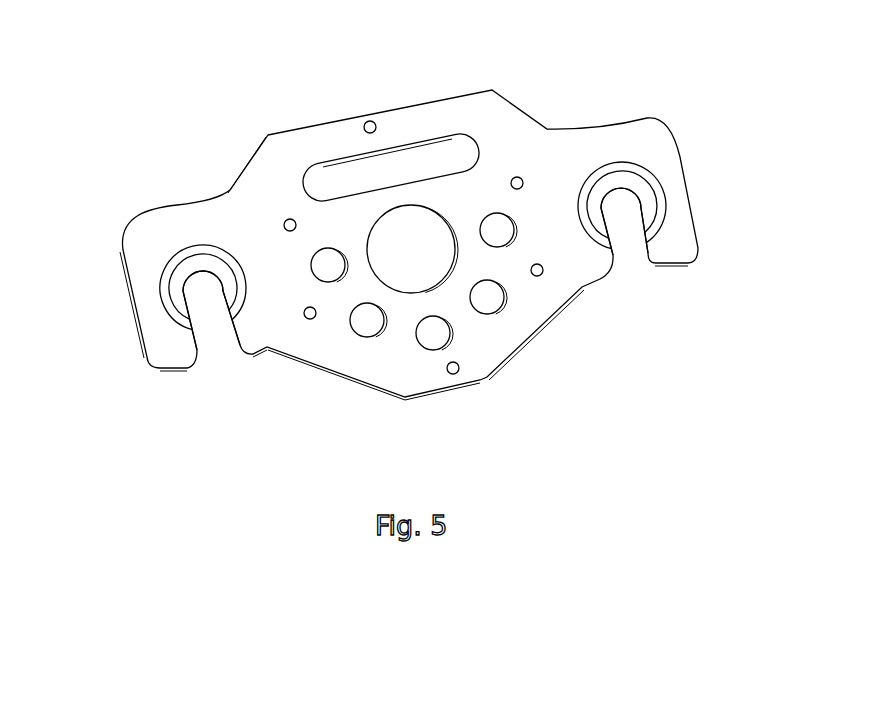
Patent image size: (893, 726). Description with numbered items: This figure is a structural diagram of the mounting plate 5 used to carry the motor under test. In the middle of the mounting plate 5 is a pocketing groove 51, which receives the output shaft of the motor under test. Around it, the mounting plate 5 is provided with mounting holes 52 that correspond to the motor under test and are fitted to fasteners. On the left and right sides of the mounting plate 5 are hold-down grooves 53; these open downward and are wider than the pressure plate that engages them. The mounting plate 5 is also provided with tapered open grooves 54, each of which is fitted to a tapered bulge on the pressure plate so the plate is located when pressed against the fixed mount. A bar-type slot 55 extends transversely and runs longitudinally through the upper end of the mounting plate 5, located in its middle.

The mounting plate 5 is at (540, 130).
The pocketing groove 51 is at (410, 252).
The mounting holes 52 is at (330, 270).
The hold-down grooves 53 is at (213, 328).
The tapered open grooves 54 is at (177, 290).
The elongated slot 55 is at (422, 165).